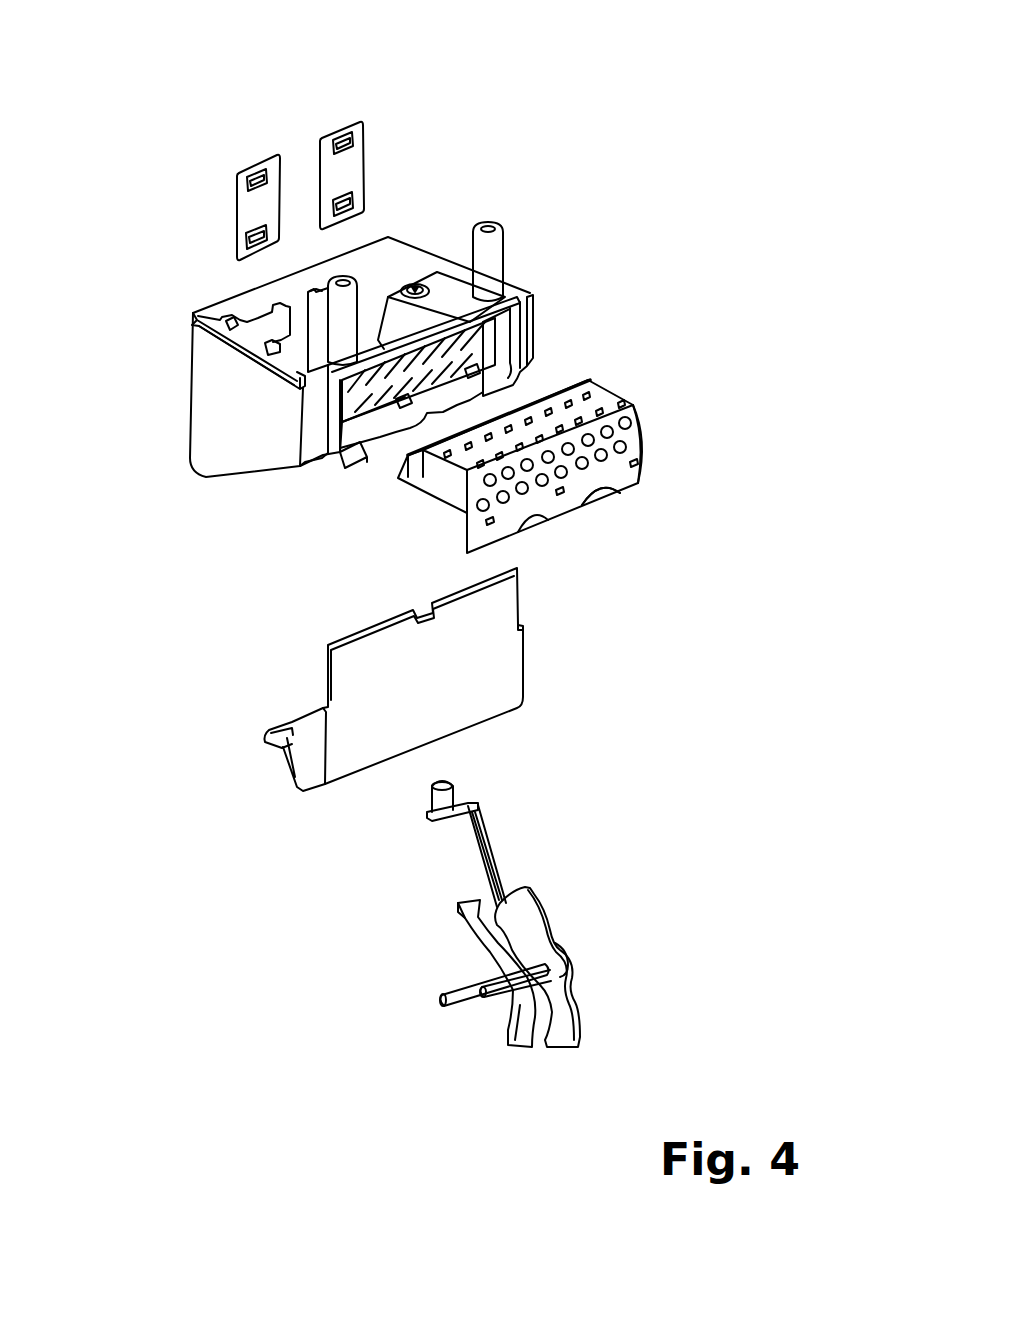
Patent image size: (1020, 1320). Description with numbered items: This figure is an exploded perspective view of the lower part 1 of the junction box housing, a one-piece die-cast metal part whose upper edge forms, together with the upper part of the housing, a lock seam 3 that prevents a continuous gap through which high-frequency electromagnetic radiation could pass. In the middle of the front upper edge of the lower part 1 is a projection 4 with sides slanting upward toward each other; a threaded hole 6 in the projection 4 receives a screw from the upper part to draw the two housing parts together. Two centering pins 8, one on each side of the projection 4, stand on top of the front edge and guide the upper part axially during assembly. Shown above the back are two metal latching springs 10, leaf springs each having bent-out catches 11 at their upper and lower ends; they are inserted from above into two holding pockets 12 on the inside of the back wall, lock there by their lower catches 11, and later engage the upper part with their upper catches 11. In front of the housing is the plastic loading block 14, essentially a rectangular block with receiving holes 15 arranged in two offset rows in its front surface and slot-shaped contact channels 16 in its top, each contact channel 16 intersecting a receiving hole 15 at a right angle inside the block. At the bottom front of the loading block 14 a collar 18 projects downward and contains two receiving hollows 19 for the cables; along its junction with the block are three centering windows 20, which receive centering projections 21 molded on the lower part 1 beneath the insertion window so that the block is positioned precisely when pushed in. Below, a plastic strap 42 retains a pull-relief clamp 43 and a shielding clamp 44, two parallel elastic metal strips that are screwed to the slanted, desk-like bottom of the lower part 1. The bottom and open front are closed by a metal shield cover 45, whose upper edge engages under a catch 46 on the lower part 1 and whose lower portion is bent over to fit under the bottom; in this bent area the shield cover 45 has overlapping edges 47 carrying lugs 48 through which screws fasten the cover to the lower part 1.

The lower part 1 is at (239, 437).
The lock seam 3 is at (237, 332).
The projection 4 is at (442, 313).
The threaded hole 6 is at (418, 283).
The centering pins 8 is at (497, 258).
The latching springs 10 is at (348, 183).
The catches 11 is at (333, 135).
The holding pockets 12 is at (318, 286).
The loading block 14 is at (560, 471).
The receiving holes 15 is at (620, 447).
The contact channels 16 is at (623, 407).
The collar 18 is at (634, 480).
The receiving hollows 19 is at (596, 490).
The centering windows 20 is at (635, 465).
The centering projections 21 is at (470, 373).
The plastic strap 42 is at (490, 850).
The pull-relief clamp 43 is at (522, 1017).
The shielding clamp 44 is at (567, 1017).
The shield cover 45 is at (458, 668).
The catch 46 is at (427, 348).
The overlapping edges 47 is at (307, 750).
The lugs 48 is at (292, 735).